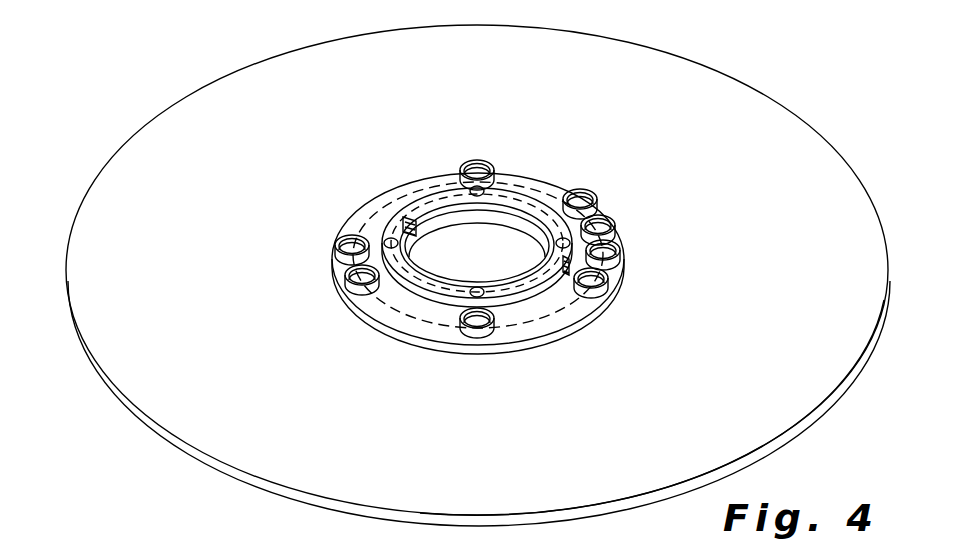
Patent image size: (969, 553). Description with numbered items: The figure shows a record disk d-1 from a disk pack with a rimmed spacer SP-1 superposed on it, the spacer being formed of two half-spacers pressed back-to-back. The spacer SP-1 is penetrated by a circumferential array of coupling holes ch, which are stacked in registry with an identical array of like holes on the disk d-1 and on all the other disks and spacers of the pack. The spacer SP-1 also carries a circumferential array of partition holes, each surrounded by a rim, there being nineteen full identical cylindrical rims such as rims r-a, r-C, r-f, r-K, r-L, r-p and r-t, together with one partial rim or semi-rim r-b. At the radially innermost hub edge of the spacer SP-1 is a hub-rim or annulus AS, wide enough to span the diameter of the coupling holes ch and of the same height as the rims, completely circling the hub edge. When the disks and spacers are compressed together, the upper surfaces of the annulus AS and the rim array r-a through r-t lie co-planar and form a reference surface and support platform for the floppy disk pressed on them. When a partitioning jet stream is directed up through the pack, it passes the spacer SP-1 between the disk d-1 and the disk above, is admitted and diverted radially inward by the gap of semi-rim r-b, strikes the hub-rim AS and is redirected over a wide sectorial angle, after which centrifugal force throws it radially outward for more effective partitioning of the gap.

The record disk d-1 is at (778, 100).
The spacer SP-1 is at (530, 174).
The hub-rim annulus AS is at (532, 272).
The coupling holes ch is at (389, 240).
The cylindrical rim r-f is at (469, 162).
The cylindrical rim r-C is at (594, 205).
The semi-rim r-b is at (607, 228).
The cylindrical rim r-a is at (615, 253).
The cylindrical rim r-t is at (606, 286).
The cylindrical rim r-p is at (494, 322).
The cylindrical rim r-K is at (338, 246).
The cylindrical rim r-L is at (347, 280).